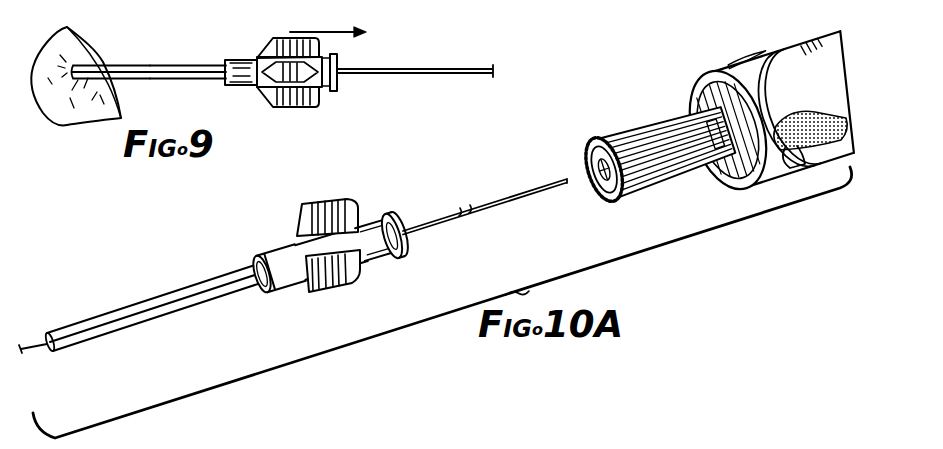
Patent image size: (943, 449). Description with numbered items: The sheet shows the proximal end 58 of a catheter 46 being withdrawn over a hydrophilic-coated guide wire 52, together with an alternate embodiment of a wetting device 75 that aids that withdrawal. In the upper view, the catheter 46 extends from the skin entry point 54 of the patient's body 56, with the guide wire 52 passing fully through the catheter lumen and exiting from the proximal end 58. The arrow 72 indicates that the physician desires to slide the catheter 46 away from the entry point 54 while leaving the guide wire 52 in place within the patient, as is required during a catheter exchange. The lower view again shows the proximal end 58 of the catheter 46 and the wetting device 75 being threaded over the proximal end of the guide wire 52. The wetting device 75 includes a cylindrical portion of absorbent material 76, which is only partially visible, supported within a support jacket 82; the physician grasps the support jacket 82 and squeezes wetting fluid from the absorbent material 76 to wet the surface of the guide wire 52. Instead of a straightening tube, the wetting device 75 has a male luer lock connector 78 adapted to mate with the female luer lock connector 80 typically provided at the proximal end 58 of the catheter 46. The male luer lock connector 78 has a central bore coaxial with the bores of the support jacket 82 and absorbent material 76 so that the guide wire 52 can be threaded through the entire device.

In FIG. 9, the catheter 46 is at (192, 62).
In FIG. 10A, the catheter 46 is at (132, 307).
In FIG. 9, the guide wire 52 is at (403, 68).
In FIG. 10A, the guide wire 52 is at (437, 210).
In FIG. 9, the skin entry point 54 is at (92, 60).
In FIG. 9, the patient's body 56 is at (82, 36).
In FIG. 9, the proximal end of catheter 58 is at (272, 38).
In FIG. 10A, the proximal end of catheter 58 is at (335, 200).
In FIG. 9, the arrow 72 is at (336, 30).
In FIG. 10A, the wetting device 75 is at (694, 69).
In FIG. 10A, the absorbent material 76 is at (837, 173).
In FIG. 10A, the male luer lock connector 78 is at (640, 120).
In FIG. 10A, the female luer lock connector 80 is at (404, 256).
In FIG. 10A, the support jacket 82 is at (838, 92).